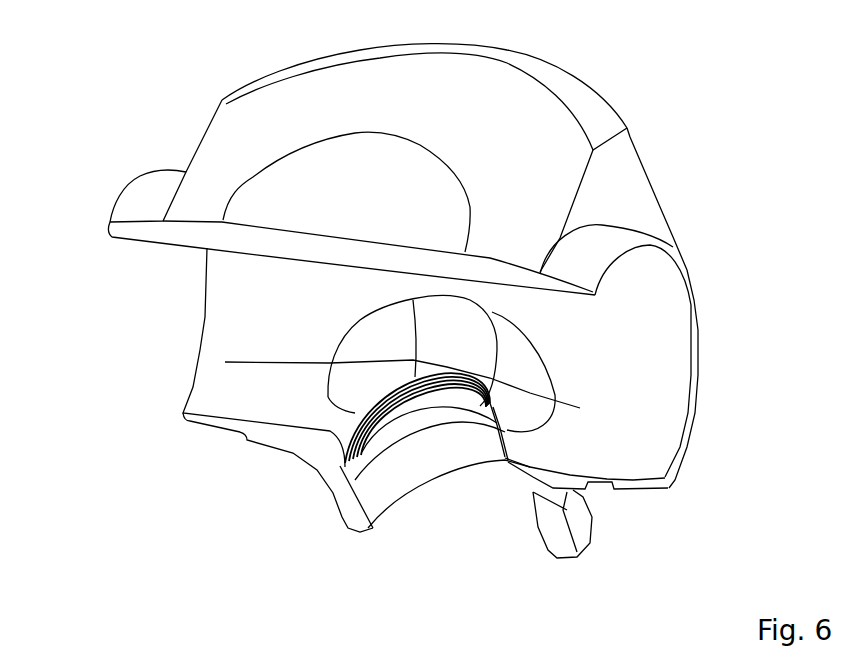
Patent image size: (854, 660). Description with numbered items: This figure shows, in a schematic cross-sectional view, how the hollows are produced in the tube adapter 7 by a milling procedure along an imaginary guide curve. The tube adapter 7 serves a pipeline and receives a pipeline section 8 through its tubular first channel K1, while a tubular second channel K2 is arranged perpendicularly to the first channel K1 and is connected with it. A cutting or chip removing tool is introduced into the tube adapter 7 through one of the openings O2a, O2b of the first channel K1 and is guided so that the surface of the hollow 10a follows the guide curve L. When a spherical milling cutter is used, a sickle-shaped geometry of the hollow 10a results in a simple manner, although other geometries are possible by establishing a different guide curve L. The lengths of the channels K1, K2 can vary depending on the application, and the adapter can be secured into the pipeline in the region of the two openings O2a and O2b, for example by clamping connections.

The tube adapter 7 is at (107, 50).
The pipeline section 8 is at (140, 190).
The opening O2a is at (158, 328).
The hollow 10a is at (427, 330).
The guide curve L is at (413, 389).
The opening O2b is at (650, 353).
The first channel K1 is at (670, 444).
The second channel K2 is at (448, 510).